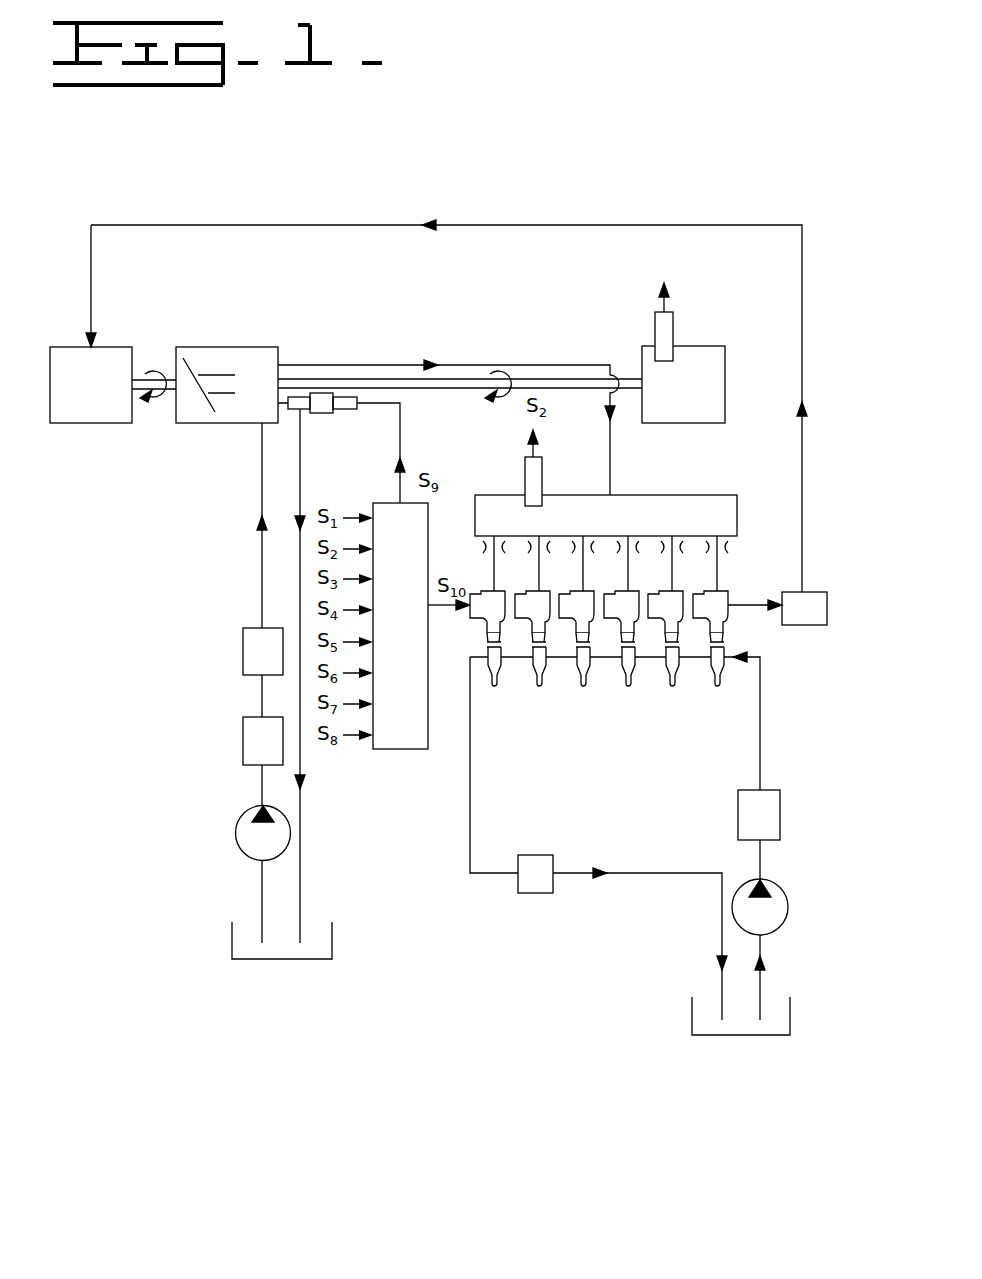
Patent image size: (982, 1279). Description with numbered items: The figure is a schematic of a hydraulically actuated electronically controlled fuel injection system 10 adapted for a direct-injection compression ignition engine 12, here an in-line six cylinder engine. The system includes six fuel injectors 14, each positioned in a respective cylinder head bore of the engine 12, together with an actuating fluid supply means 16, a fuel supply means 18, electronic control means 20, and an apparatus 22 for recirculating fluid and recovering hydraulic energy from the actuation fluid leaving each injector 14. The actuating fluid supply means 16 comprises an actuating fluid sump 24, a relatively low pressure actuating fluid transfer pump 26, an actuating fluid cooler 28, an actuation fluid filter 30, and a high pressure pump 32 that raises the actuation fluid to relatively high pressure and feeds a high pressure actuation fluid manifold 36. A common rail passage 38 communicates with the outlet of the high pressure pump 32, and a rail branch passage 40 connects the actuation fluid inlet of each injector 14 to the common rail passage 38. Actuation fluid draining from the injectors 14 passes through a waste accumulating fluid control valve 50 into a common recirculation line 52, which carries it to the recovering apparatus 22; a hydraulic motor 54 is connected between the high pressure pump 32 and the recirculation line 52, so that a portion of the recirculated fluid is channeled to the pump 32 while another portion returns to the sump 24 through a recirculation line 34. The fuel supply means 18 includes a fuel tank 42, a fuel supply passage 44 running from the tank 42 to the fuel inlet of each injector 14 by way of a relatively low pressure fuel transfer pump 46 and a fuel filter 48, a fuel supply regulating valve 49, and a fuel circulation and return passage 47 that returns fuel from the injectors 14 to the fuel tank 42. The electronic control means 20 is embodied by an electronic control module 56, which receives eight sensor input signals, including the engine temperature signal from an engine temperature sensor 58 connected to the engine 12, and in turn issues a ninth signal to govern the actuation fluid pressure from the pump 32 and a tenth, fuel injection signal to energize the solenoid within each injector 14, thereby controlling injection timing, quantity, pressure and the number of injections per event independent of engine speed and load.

The fuel injection system 10 is at (170, 186).
The engine 12 is at (696, 395).
The fuel injectors 14 is at (497, 684).
The actuating fluid supply means 16 is at (297, 993).
The fuel supply means 18 is at (733, 1056).
The electronic control means 20 is at (400, 765).
The recirculating and hydraulic energy recovering means 22 is at (57, 245).
The actuating fluid sump 24 is at (333, 935).
The actuating fluid transfer pump 26 is at (243, 835).
The actuating fluid cooler 28 is at (250, 738).
The actuation fluid filter 30 is at (248, 665).
The high pressure pump 32 is at (228, 424).
The recirculation line 34 is at (303, 850).
The actuation fluid manifold 36 is at (668, 472).
The common rail passage 38 is at (510, 495).
The rail branch passage 40 is at (717, 565).
The fuel tank 42 is at (692, 1020).
The fuel supply passage 44 is at (762, 768).
The fuel transfer pump 46 is at (785, 893).
The fuel circulation and return passage 47 is at (720, 938).
The fuel filter 48 is at (768, 808).
The fuel supply regulating valve 49 is at (532, 893).
The waste accumulating fluid control valve 50 is at (817, 620).
The common recirculation line 52 is at (262, 225).
The hydraulic motor 54 is at (104, 397).
The electronic control module 56 is at (413, 617).
The engine temperature sensor 58 is at (673, 330).